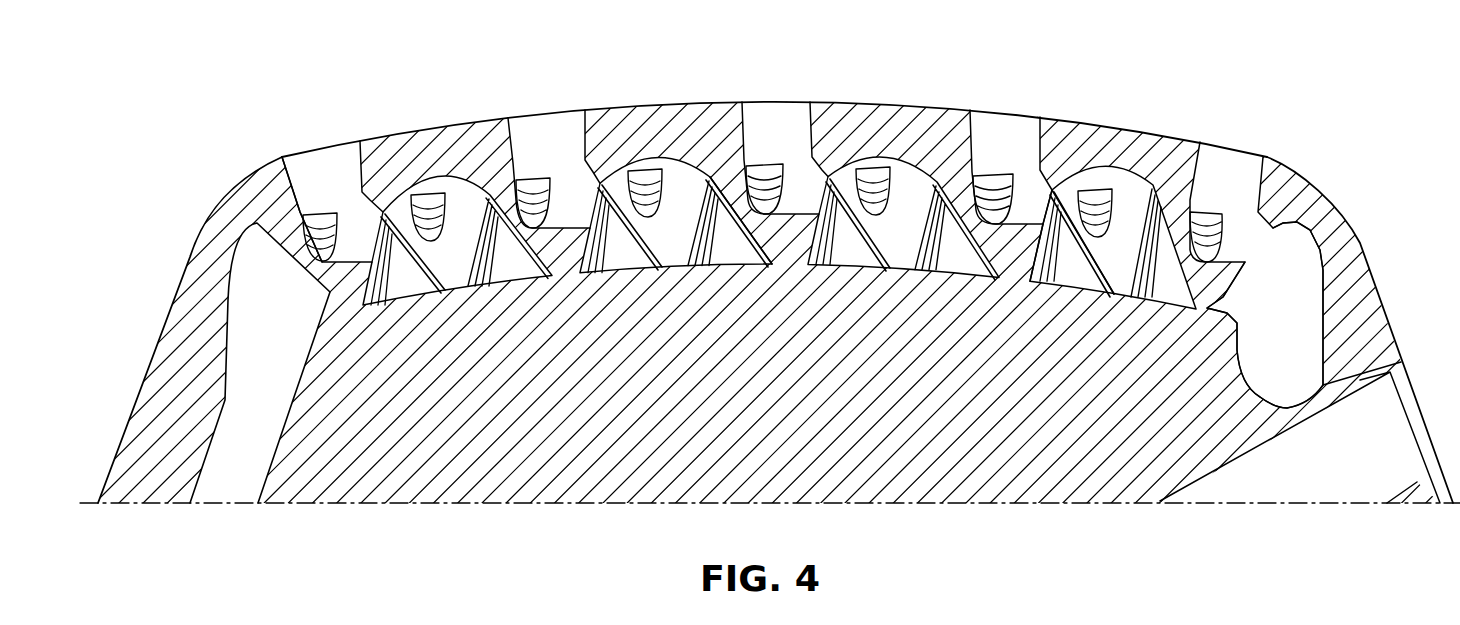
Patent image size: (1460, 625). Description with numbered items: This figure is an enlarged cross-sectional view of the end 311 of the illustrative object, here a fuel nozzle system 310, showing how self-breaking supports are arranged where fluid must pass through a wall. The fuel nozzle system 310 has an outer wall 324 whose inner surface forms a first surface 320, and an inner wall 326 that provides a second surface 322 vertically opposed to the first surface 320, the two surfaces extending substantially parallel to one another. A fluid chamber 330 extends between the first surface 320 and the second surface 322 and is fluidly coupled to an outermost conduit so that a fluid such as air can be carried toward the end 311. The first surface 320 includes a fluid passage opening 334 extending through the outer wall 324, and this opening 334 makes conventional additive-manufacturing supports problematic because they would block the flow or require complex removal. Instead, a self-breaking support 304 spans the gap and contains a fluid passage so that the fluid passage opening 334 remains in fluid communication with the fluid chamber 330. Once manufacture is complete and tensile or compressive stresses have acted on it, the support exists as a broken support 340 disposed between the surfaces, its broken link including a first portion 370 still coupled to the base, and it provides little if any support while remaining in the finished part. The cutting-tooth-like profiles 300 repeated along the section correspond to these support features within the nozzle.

The cutting insert 300 is at (507, 262).
The self-breaking support 304 is at (1093, 376).
The broken support 340 is at (1095, 285).
The fuel nozzle system 310 is at (1398, 334).
The end 311 is at (1128, 120).
The first surface 320 is at (710, 177).
The second surface 322 is at (247, 447).
The outer wall 324 is at (266, 193).
The inner wall 326 is at (340, 353).
The fluid chamber 330 is at (1297, 247).
The fluid passage opening 334 is at (333, 167).
The first portion 370 is at (1240, 174).